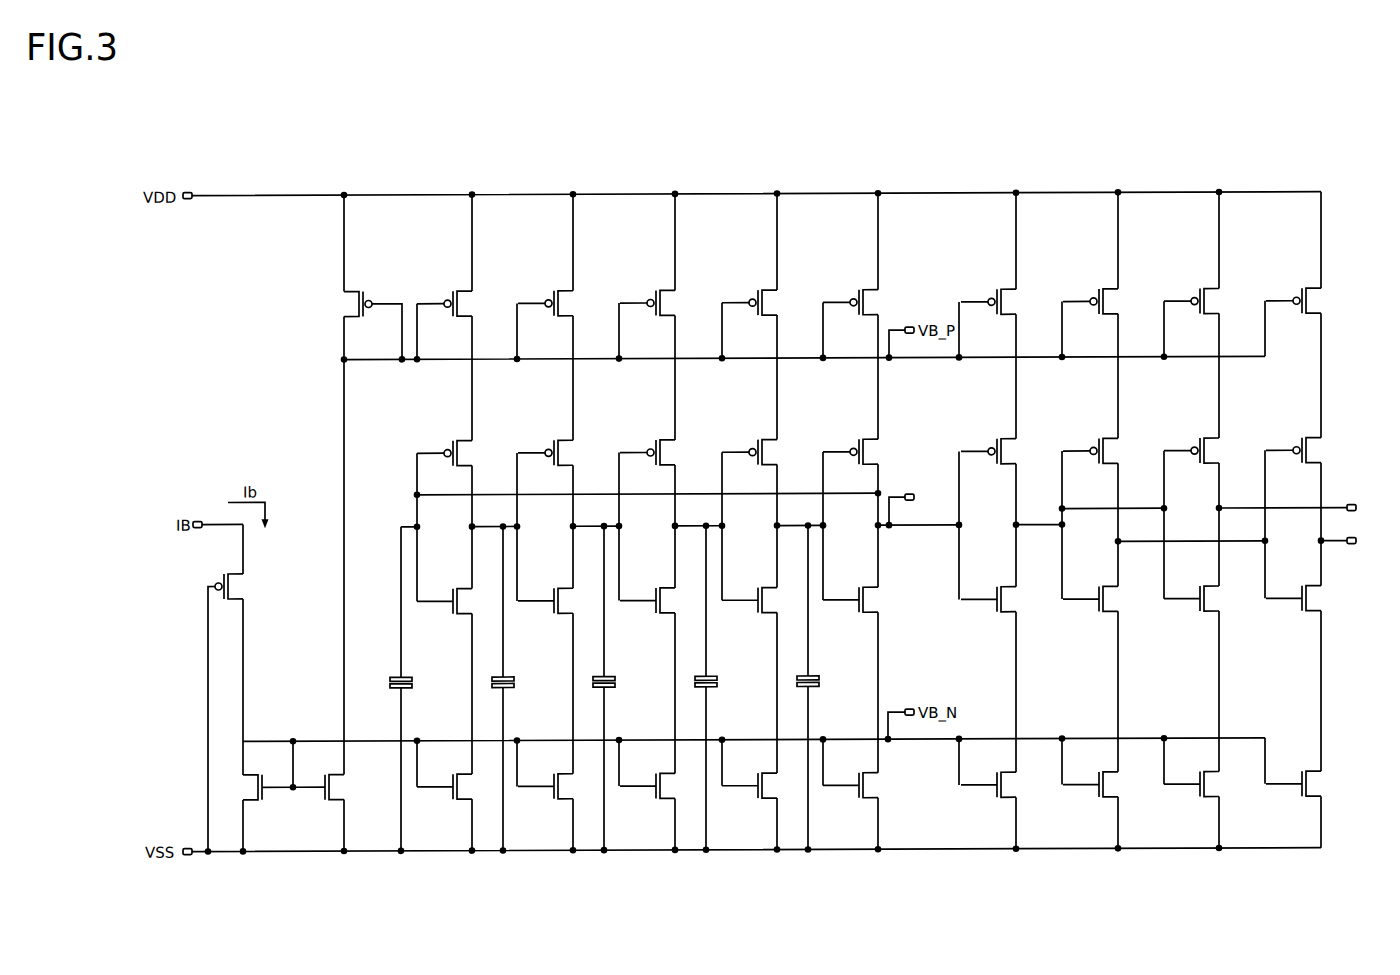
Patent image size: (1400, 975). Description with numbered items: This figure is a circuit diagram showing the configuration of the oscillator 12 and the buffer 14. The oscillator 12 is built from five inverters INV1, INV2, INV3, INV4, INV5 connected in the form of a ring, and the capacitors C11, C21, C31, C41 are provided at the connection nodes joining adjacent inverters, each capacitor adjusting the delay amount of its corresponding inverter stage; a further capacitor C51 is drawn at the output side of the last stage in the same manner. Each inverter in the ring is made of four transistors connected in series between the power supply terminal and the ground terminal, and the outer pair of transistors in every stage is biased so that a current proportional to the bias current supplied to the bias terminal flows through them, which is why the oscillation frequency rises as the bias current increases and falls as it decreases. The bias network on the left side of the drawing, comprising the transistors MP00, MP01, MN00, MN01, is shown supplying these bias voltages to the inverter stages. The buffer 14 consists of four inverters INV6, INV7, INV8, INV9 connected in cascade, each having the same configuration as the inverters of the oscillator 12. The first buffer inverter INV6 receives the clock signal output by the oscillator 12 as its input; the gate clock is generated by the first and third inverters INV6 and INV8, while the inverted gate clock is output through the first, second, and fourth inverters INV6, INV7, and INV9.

The oscillator 12 is at (672, 557).
The buffer 14 is at (1167, 555).
The inverter INV1 is at (453, 541).
The inverter INV2 is at (554, 540).
The inverter INV3 is at (656, 540).
The inverter INV4 is at (758, 539).
The inverter INV5 is at (859, 539).
The inverter INV6 is at (996, 539).
The inverter INV7 is at (1099, 538).
The inverter INV8 is at (1200, 538).
The inverter INV9 is at (1302, 538).
The capacitor C11 is at (414, 689).
The capacitor C21 is at (516, 688).
The capacitor C31 is at (617, 688).
The capacitor C41 is at (719, 688).
The load capacitor of INV5 C51 is at (821, 687).
The bias PMOS transistor MP00 is at (218, 704).
The bias PMOS transistor (diode-connected) MP01 is at (373, 316).
The bias NMOS transistor MN00 is at (266, 779).
The bias NMOS transistor MN01 is at (318, 779).